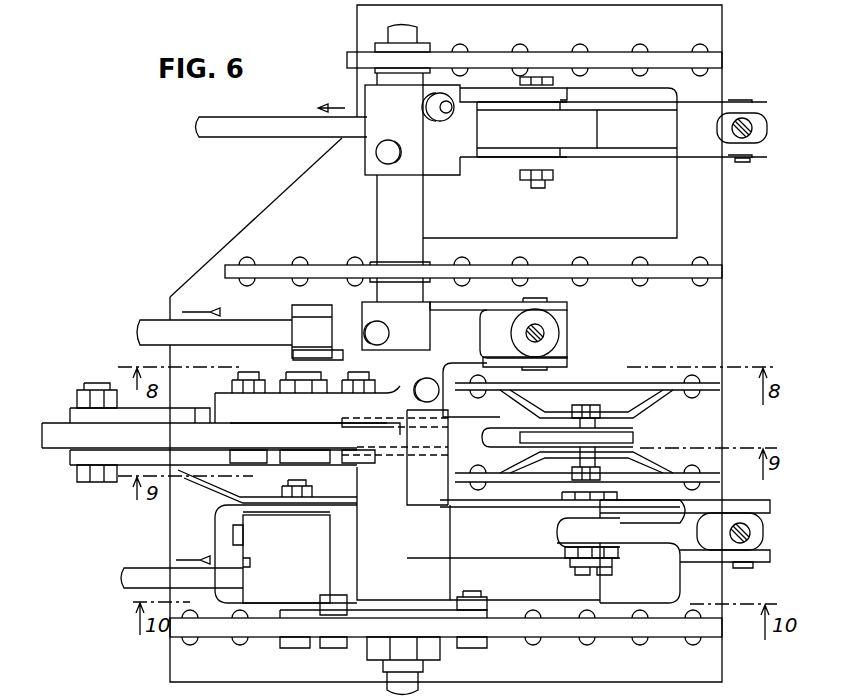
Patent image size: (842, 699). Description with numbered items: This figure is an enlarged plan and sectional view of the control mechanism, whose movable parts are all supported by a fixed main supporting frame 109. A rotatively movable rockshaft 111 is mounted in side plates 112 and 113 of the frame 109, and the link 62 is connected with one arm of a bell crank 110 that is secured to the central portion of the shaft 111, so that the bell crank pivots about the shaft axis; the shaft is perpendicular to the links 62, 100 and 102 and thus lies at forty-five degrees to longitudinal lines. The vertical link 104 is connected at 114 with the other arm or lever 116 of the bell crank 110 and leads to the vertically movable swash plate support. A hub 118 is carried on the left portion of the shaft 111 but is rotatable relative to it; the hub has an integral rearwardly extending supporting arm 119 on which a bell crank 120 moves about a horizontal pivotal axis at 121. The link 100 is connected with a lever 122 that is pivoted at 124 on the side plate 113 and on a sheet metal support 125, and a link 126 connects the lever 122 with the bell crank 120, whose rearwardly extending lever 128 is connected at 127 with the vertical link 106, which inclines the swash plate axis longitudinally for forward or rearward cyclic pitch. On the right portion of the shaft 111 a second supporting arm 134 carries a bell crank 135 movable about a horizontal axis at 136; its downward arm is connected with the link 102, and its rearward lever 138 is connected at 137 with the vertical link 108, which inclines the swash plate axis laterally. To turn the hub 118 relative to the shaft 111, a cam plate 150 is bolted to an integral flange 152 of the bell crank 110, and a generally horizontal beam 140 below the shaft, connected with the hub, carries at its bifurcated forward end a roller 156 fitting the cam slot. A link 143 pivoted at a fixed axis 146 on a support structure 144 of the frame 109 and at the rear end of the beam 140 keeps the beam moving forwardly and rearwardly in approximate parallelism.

The link 62 is at (247, 326).
The link 100 is at (131, 570).
The link 102 is at (292, 126).
The vertical link 104 is at (546, 336).
The vertical link 106 is at (751, 531).
The vertical link 108 is at (752, 128).
The main supporting frame 109 is at (264, 214).
The bell crank 110 is at (349, 316).
The rockshaft 111 is at (384, 212).
The side plate 112 is at (494, 60).
The side plate 113 is at (265, 626).
The connection 114 is at (540, 362).
The lever 116 is at (468, 318).
The hub 118 is at (410, 431).
The supporting arm 119 is at (500, 548).
The bell crank 120 is at (575, 533).
The pivotal axis 121 is at (600, 580).
The lever 122 is at (345, 573).
The pivot 124 is at (300, 640).
The sheet metal support 125 is at (270, 506).
The link 126 is at (345, 540).
The connection 127 is at (748, 562).
The lever 128 is at (645, 533).
The second supporting arm 134 is at (455, 160).
The bell crank 135 is at (580, 138).
The pivotal axis 136 is at (538, 188).
The connection 137 is at (746, 160).
The lever 138 is at (651, 150).
The beam 140 is at (198, 413).
The link 143 is at (630, 438).
The support structure 144 is at (616, 418).
The fixed axis 146 is at (596, 404).
The cam plate 150 is at (58, 424).
The flange 152 is at (272, 400).
The roller 156 is at (80, 456).